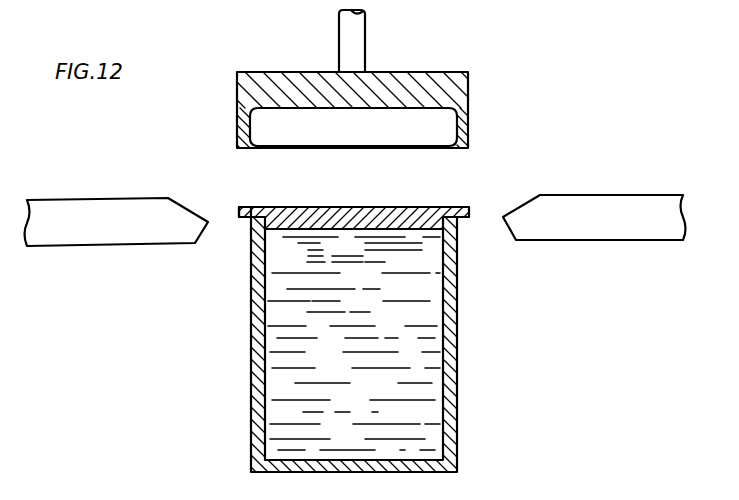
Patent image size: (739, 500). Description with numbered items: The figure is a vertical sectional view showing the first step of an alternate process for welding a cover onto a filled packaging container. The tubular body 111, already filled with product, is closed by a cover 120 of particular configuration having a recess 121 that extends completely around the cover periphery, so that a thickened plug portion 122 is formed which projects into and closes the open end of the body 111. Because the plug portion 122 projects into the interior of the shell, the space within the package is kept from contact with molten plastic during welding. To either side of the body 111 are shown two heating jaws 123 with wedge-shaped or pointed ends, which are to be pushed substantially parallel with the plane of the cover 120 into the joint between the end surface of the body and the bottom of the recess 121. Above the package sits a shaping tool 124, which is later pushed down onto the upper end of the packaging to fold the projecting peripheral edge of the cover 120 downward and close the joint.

The body 111 is at (253, 355).
The cover 120 is at (304, 216).
The recess 121 is at (250, 218).
The plug portion 122 is at (292, 229).
The heating jaws 123 is at (120, 238).
The shaping tool 124 is at (237, 105).